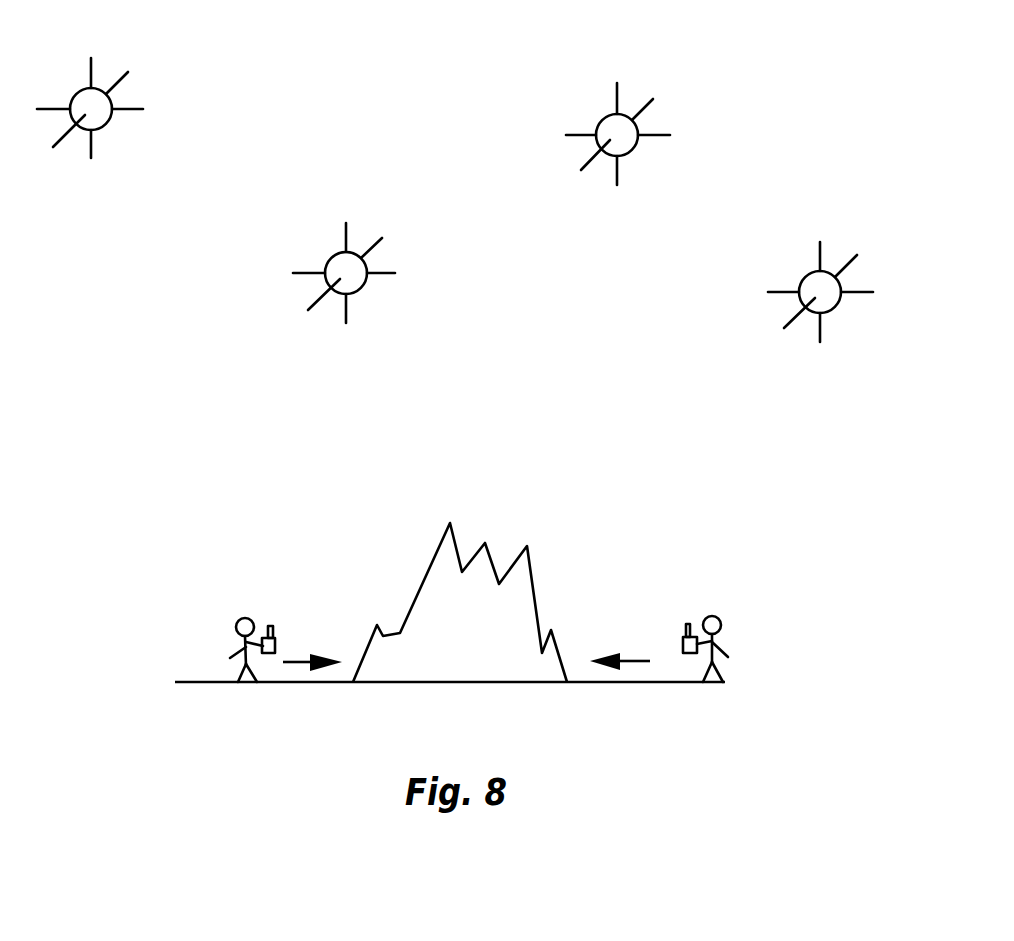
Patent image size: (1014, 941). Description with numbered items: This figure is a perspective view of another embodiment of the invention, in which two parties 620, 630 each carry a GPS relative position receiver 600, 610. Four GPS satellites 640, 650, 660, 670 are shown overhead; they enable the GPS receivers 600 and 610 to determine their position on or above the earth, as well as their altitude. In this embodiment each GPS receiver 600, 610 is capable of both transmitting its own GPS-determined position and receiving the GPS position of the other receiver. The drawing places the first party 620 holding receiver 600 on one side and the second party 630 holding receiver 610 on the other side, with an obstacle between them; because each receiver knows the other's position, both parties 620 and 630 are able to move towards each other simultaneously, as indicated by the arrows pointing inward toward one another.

The GPS receiver 600 is at (278, 642).
The GPS receiver 610 is at (682, 643).
The party 620 is at (236, 627).
The party 630 is at (727, 622).
The GPS satellite 640 is at (98, 70).
The GPS satellite 650 is at (348, 238).
The GPS satellite 660 is at (619, 93).
The GPS satellite 670 is at (823, 252).